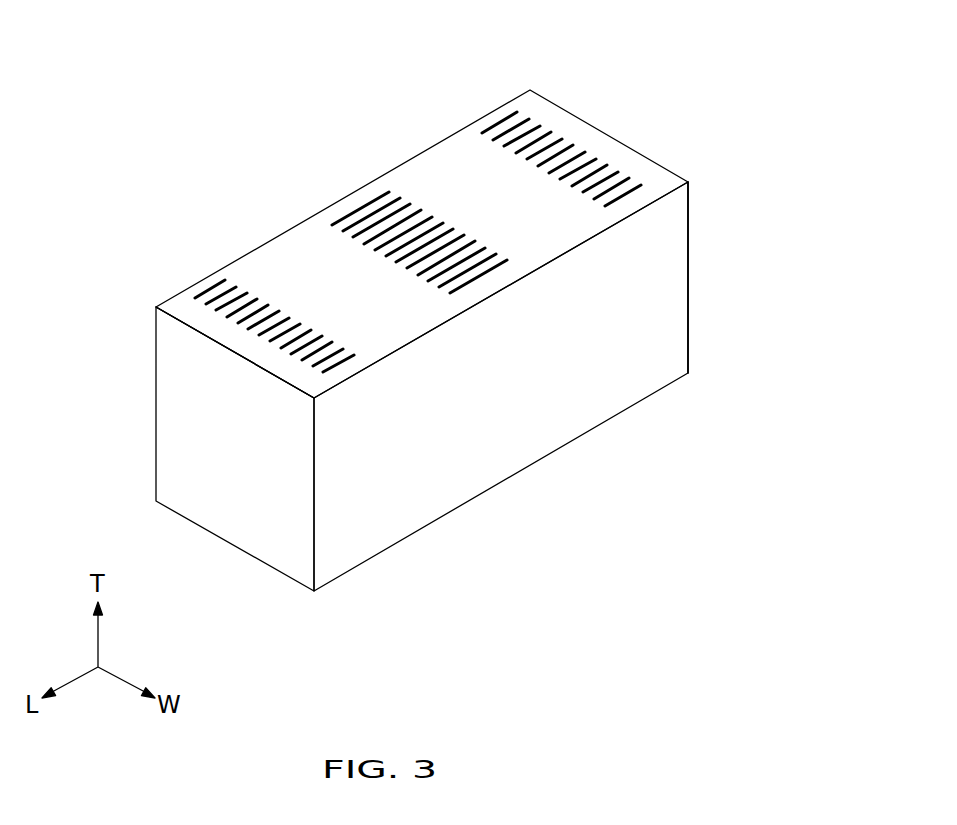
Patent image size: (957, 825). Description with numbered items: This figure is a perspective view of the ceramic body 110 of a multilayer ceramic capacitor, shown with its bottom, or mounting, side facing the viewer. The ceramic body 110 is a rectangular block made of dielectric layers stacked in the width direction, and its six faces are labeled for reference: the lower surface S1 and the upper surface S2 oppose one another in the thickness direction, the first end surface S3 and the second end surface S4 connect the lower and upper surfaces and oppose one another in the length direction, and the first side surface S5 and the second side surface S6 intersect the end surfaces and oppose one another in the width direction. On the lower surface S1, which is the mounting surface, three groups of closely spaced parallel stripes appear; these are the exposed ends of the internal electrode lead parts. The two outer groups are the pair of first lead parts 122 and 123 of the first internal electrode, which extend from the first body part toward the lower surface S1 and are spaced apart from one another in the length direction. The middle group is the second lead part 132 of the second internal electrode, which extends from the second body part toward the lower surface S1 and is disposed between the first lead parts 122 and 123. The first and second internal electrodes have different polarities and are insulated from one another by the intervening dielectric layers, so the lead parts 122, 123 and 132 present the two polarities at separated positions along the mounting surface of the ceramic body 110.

The ceramic body 110 is at (425, 314).
The first lead part 122 is at (212, 290).
The first lead part 123 is at (510, 128).
The second lead part 132 is at (372, 215).
The lower surface S1 is at (440, 166).
The upper surface S2 is at (437, 508).
The first end surface S3 is at (178, 431).
The second end surface S4 is at (678, 238).
The first side surface S5 is at (287, 250).
The second side surface S6 is at (672, 319).